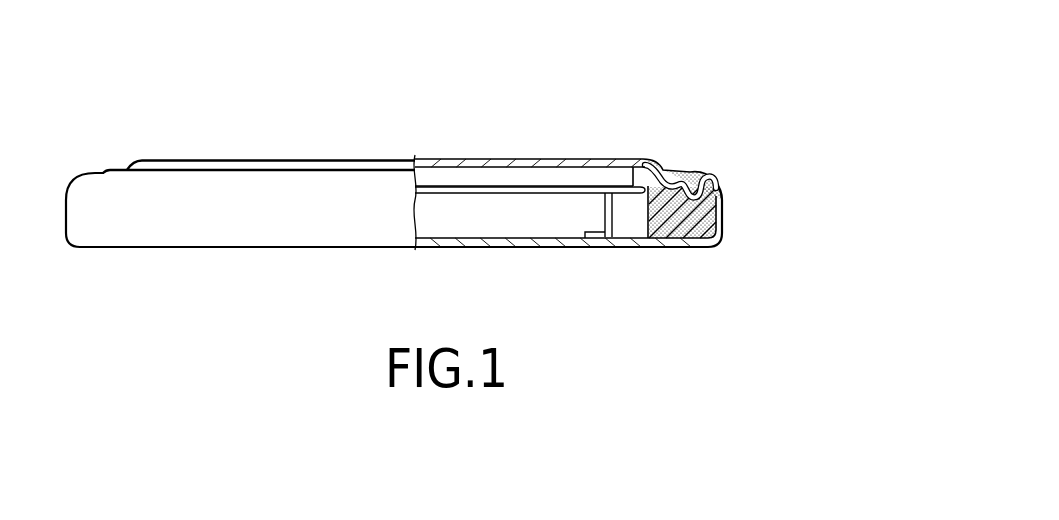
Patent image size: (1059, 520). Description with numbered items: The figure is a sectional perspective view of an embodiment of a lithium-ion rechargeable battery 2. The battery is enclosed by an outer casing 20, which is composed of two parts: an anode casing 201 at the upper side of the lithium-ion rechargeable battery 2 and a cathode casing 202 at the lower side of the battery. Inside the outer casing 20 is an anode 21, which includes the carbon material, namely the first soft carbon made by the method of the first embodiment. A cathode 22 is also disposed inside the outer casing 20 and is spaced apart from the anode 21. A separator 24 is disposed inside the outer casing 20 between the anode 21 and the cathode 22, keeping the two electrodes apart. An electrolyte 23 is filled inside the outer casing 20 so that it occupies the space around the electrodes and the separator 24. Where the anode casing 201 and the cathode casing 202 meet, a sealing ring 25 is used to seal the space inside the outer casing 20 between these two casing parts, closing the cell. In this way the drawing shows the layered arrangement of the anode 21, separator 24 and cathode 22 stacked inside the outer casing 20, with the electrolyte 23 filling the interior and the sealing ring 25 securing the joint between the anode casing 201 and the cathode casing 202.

The lithium-ion rechargeable battery 2 is at (731, 82).
The outer casing 20 is at (636, 188).
The anode casing 201 is at (664, 171).
The cathode casing 202 is at (723, 203).
The anode 21 is at (466, 160).
The cathode 22 is at (537, 232).
The electrolyte 23 is at (630, 240).
The separator 24 is at (562, 168).
The sealing ring 25 is at (681, 240).